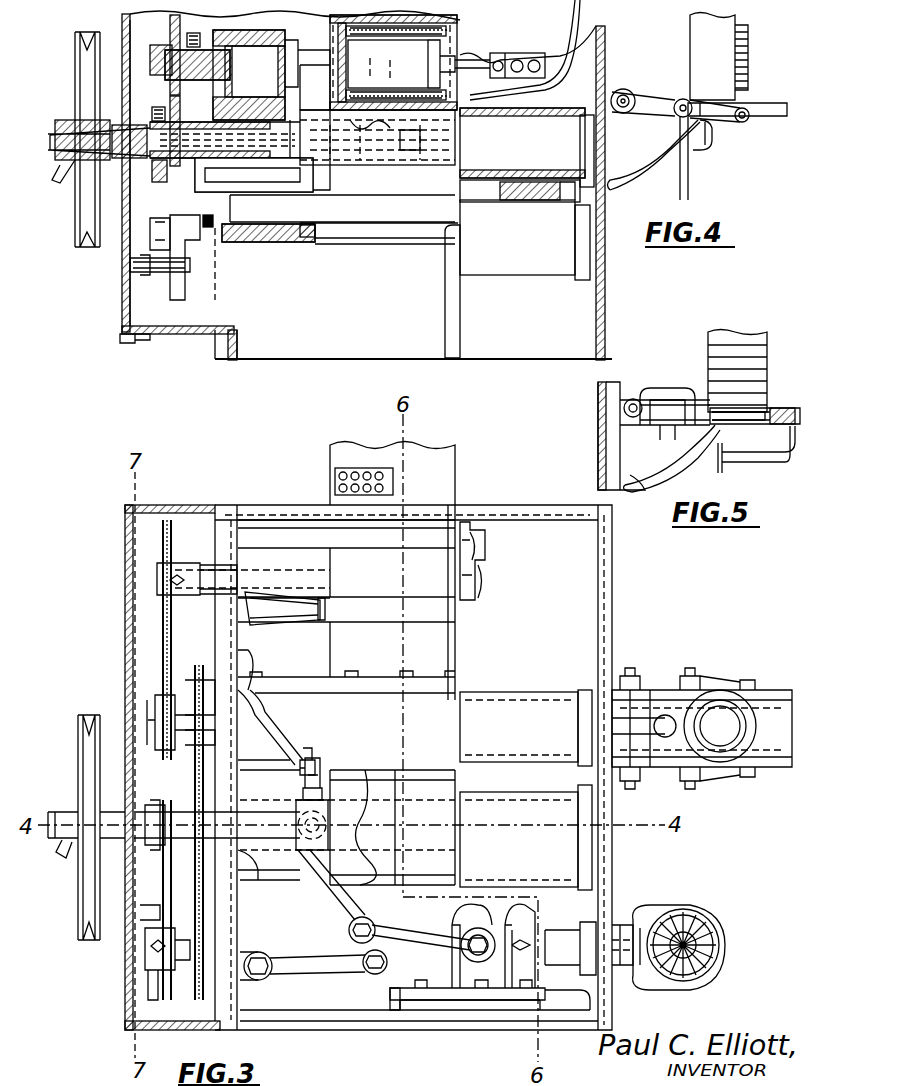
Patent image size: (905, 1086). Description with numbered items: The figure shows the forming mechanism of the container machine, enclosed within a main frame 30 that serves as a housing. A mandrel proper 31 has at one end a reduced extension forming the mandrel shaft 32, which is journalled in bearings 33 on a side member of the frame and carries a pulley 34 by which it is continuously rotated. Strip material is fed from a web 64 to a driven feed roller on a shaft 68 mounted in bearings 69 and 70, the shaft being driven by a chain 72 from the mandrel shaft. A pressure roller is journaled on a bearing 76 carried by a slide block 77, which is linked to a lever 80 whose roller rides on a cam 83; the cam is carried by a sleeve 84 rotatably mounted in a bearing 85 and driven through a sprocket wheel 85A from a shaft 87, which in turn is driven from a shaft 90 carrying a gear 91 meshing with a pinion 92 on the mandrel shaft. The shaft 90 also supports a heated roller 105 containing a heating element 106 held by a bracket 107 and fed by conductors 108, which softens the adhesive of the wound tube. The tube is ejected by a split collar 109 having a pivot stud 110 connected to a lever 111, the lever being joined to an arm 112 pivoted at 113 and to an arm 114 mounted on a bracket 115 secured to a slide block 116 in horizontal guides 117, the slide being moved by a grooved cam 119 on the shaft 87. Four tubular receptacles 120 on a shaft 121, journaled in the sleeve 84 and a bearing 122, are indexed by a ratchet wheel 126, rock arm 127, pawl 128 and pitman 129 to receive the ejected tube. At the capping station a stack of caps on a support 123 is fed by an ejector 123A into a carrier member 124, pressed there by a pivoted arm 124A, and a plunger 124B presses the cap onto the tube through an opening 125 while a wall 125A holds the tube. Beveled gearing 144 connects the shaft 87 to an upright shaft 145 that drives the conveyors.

In FIG. 4, the main frame 30 is at (233, 360).
In FIG. 3, the main frame 30 is at (608, 645).
In FIG. 4, the mandrel proper 31 is at (398, 166).
In FIG. 4, the mandrel shaft 32 is at (286, 118).
In FIG. 4, the bearings 33 is at (251, 154).
In FIG. 4, the pulley 34 is at (78, 207).
In FIG. 3, the web 64 is at (458, 472).
In FIG. 3, the shaft 68 is at (245, 580).
In FIG. 3, the bearing 69 is at (485, 583).
In FIG. 3, the bearing 70 is at (320, 582).
In FIG. 3, the chain 72 is at (172, 645).
In FIG. 3, the bearing 76 is at (312, 614).
In FIG. 3, the slide block 77 is at (248, 612).
In FIG. 3, the lever 80 is at (275, 732).
In FIG. 4, the cam 83 is at (312, 236).
In FIG. 3, the cam 83 is at (318, 762).
In FIG. 4, the sleeve 84 is at (280, 245).
In FIG. 4, the bearing 85 is at (258, 244).
In FIG. 4, the sprocket wheel 85A is at (208, 232).
In FIG. 3, the shaft 87 is at (560, 948).
In FIG. 4, the shaft 90 is at (175, 62).
In FIG. 4, the gear 91 is at (168, 97).
In FIG. 4, the pinion 92 is at (170, 112).
In FIG. 4, the heated roller 105 is at (335, 25).
In FIG. 3, the heated roller 105 is at (362, 876).
In FIG. 4, the heating element 106 is at (450, 33).
In FIG. 4, the bracket 107 is at (505, 56).
In FIG. 4, the conductors 108 is at (529, 50).
In FIG. 4, the split collar 109 is at (325, 150).
In FIG. 3, the split collar 109 is at (324, 797).
In FIG. 3, the pivot stud 110 is at (330, 818).
In FIG. 3, the lever 111 is at (330, 890).
In FIG. 3, the arm 112 is at (325, 975).
In FIG. 3, the pivot 113 is at (266, 978).
In FIG. 3, the arm 114 is at (380, 930).
In FIG. 3, the bracket 115 is at (480, 960).
In FIG. 3, the slide block 116 is at (393, 996).
In FIG. 3, the horizontal guides 117 is at (432, 1002).
In FIG. 3, the cam 119 is at (498, 925).
In FIG. 4, the tubular receptacles 120 is at (470, 195).
In FIG. 3, the tubular receptacles 120 is at (492, 694).
In FIG. 4, the shaft 121 is at (380, 224).
In FIG. 4, the bearing 122 is at (576, 195).
In FIG. 4, the support 123 is at (755, 103).
In FIG. 5, the support 123 is at (770, 405).
In FIG. 3, the support 123 is at (762, 692).
In FIG. 5, the ejector 123A is at (775, 424).
In FIG. 4, the carrier member 124 is at (720, 128).
In FIG. 5, the carrier member 124 is at (650, 426).
In FIG. 5, the pivoted arm 124A is at (665, 388).
In FIG. 5, the plunger 124B is at (750, 464).
In FIG. 4, the opening 125 is at (600, 150).
In FIG. 5, the opening 125 is at (605, 445).
In FIG. 4, the wall 125A is at (456, 262).
In FIG. 4, the ratchet wheel 126 is at (196, 270).
In FIG. 4, the rock arm 127 is at (155, 232).
In FIG. 4, the pawl 128 is at (168, 274).
In FIG. 4, the pitman 129 is at (133, 290).
In FIG. 3, the pitman 129 is at (150, 893).
In FIG. 3, the beveled gearing 144 is at (676, 930).
In FIG. 3, the upright shaft 145 is at (700, 935).